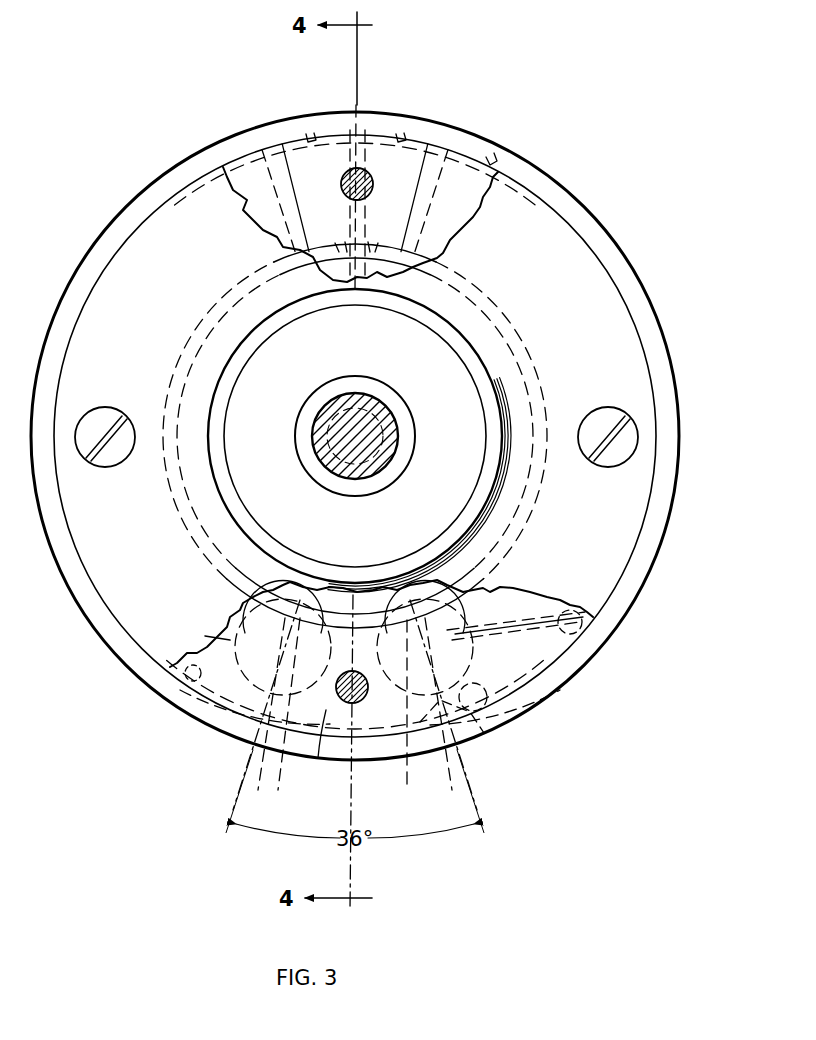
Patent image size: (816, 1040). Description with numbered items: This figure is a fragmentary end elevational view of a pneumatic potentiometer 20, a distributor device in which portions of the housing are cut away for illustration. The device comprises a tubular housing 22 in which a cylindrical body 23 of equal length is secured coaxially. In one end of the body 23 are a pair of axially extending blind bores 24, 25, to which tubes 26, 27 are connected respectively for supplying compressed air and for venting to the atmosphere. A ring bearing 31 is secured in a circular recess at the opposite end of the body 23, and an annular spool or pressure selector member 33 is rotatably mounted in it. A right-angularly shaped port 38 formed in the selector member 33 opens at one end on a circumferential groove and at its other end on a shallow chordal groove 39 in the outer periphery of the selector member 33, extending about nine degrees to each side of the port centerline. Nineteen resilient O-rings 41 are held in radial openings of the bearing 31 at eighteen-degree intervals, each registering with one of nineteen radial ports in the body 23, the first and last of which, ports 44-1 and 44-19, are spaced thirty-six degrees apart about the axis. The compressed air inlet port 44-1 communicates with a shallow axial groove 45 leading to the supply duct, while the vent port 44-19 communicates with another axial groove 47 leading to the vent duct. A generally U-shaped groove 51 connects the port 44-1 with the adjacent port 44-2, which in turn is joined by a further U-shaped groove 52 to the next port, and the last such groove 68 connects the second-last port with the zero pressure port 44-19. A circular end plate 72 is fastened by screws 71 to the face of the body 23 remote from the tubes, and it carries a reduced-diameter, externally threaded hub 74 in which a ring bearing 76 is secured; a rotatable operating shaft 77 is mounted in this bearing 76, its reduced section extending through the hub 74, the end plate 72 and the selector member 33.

The pneumatic potentiometer 20 is at (458, 110).
The tubular housing 22 is at (624, 254).
The cylindrical body 23 is at (330, 713).
The blind bore 24 is at (482, 601).
The blind bore 25 is at (241, 606).
The tube 26 is at (462, 664).
The tube 27 is at (228, 642).
The ring bearing 31 is at (338, 620).
The pressure selector member 33 is at (372, 602).
The right-angularly shaped port 38 is at (324, 284).
The chordal groove 39 is at (410, 262).
The O-ring 41 is at (369, 244).
The radial port 44-1 is at (408, 746).
The radial port 44-2 is at (547, 622).
The radial port 44-19 is at (271, 705).
The axially extending groove 45 is at (468, 737).
The axially extending groove 47 is at (238, 738).
The U-shaped groove 51 is at (503, 718).
The U-shaped groove 52 is at (574, 642).
The U-shaped groove 68 is at (186, 680).
The screws 71 is at (343, 180).
The circular end plate 72 is at (544, 219).
The hub 74 is at (484, 362).
The ring bearing 76 is at (308, 406).
The operating shaft 77 is at (396, 434).